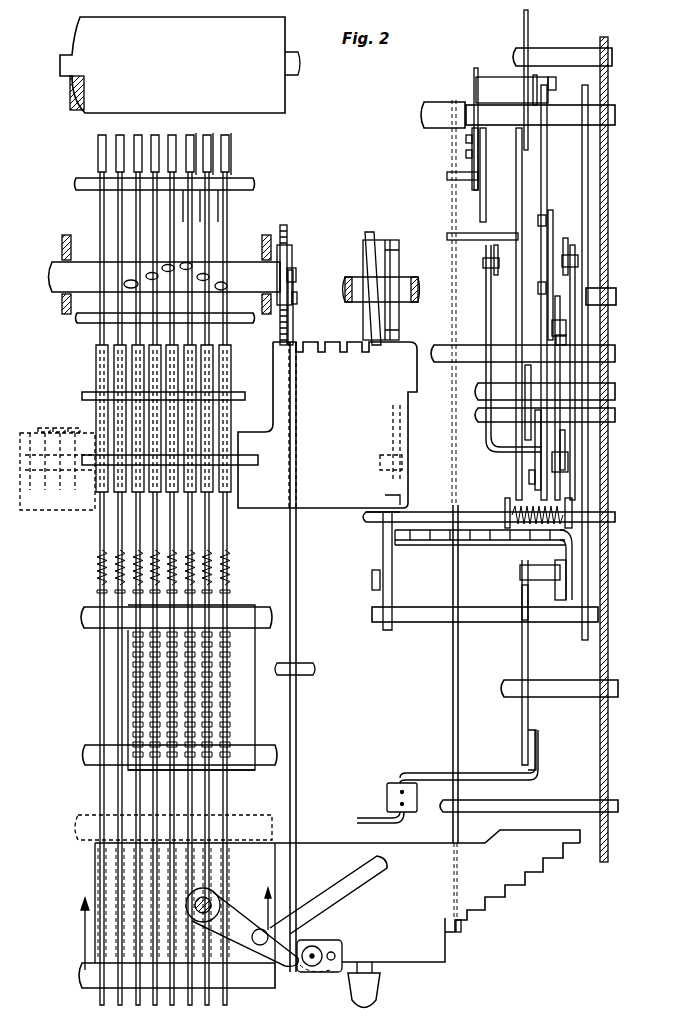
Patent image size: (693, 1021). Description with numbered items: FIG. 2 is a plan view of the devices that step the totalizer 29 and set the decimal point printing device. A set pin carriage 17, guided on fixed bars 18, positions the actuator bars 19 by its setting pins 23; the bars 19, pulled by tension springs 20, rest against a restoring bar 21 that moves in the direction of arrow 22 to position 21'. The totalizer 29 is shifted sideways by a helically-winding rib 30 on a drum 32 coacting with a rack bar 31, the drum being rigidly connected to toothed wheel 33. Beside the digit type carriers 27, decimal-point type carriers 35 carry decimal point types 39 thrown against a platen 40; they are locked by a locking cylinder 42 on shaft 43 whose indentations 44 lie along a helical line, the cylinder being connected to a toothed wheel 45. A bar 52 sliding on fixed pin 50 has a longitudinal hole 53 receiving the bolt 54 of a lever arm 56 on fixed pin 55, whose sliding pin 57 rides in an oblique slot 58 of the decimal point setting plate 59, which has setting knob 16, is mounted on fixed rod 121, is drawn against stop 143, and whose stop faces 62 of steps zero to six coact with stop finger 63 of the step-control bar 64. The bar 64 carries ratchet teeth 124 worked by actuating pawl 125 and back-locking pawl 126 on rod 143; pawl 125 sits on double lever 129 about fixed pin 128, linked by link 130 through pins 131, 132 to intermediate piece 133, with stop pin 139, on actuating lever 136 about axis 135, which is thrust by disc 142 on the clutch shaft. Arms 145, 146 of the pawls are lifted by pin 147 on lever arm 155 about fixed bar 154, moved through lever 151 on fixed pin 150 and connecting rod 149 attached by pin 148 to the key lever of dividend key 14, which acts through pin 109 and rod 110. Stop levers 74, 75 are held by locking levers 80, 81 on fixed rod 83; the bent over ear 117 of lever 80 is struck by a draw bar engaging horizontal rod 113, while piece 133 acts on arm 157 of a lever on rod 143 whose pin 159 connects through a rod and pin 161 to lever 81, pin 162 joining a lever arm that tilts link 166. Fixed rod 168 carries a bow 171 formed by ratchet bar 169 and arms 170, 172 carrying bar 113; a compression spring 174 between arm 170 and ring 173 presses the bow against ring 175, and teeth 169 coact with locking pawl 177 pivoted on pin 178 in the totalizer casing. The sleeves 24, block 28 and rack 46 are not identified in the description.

The platen 40 is at (275, 90).
The decimal point type 39 is at (130, 135).
The digit type carriers 27 is at (196, 133).
The decimal-point type carriers 35 is at (186, 213).
The locking cylinder 42 is at (60, 268).
The indentations 44 is at (222, 284).
The rack 46 is at (290, 232).
The toothed wheel 45 is at (286, 262).
The shaft 43 is at (297, 278).
The rack bar 31 is at (332, 342).
The totalizer 29 is at (279, 392).
The helically-winding rib 30 is at (369, 236).
The drum 32 is at (380, 248).
The toothed wheel 33 is at (393, 250).
The sleeves 24 is at (100, 378).
The block 28 is at (50, 432).
The actuator bars 19 is at (136, 522).
The tension springs 20 is at (92, 570).
The fixed bars 18 is at (90, 752).
The setting pins 23 is at (170, 656).
The set pin carriage 17 is at (135, 698).
The fixed pin 50 is at (300, 666).
The bar 52 is at (296, 776).
The restoring bar end position 21' is at (157, 824).
The decimal point setting plate 59 is at (318, 846).
The oblique slot 58 is at (332, 893).
The fixed pin 55 is at (212, 900).
The sliding pin 57 is at (258, 930).
The longitudinal hole 53 is at (330, 953).
The arrow 22 is at (72, 934).
The restoring bar 21 is at (154, 975).
The lever arm 56 is at (280, 950).
The bolt 54 is at (313, 966).
The setting knob 16 is at (370, 985).
The lever arm 155 is at (524, 28).
The fixed bar 154 is at (607, 58).
The disc 142 is at (535, 95).
The double lever 129 is at (475, 80).
The pin 132 is at (556, 82).
The fixed rod 121 is at (430, 110).
The fixed pin 128 is at (607, 115).
The actuating pawl 125 is at (450, 174).
The ratchet gear 124 is at (452, 192).
The pin 147 is at (492, 140).
The projecting arm 145 is at (477, 203).
The projecting arm 146 is at (518, 226).
The link 130 is at (546, 180).
The back locking pawl 126 is at (540, 605).
The pin 131 is at (541, 220).
The lever 151 is at (588, 210).
The intermediate piece 133 is at (553, 229).
The stop pin 139 is at (541, 284).
The stop lever 75 is at (578, 262).
The stop lever 74 is at (496, 272).
The fixed pin 150 is at (602, 295).
The actuating lever 136 is at (556, 332).
The right arm 157 is at (562, 340).
The axis 135 is at (607, 353).
The locking lever 80 is at (486, 374).
The pin 162 is at (531, 390).
The fixed rod 83 is at (607, 393).
The fixed rod 143 is at (607, 415).
The link 166 is at (541, 428).
The bent over ear 117 is at (498, 453).
The locking lever 81 is at (565, 446).
The pin 161 is at (560, 462).
The ring 173 is at (506, 500).
The compression spring 174 is at (520, 500).
The pin 159 is at (565, 505).
The ring 175 is at (578, 516).
The fixed rod 168 is at (367, 520).
The locking pawl 177 is at (405, 520).
The bow 171 is at (432, 540).
The ratchet gear bar 169 is at (480, 540).
The arm 170 is at (572, 560).
The connecting rod 149 is at (562, 576).
The arm 172 is at (392, 593).
The pin 148 is at (530, 576).
The horizontal rod 113 is at (494, 622).
The pin 109 is at (528, 665).
The step-control bar 64 is at (453, 712).
The rod 110 is at (575, 690).
The dividend key 14 is at (396, 785).
The stop faces 62 is at (473, 907).
The stop finger 63 is at (463, 930).
The pin 178 is at (382, 462).